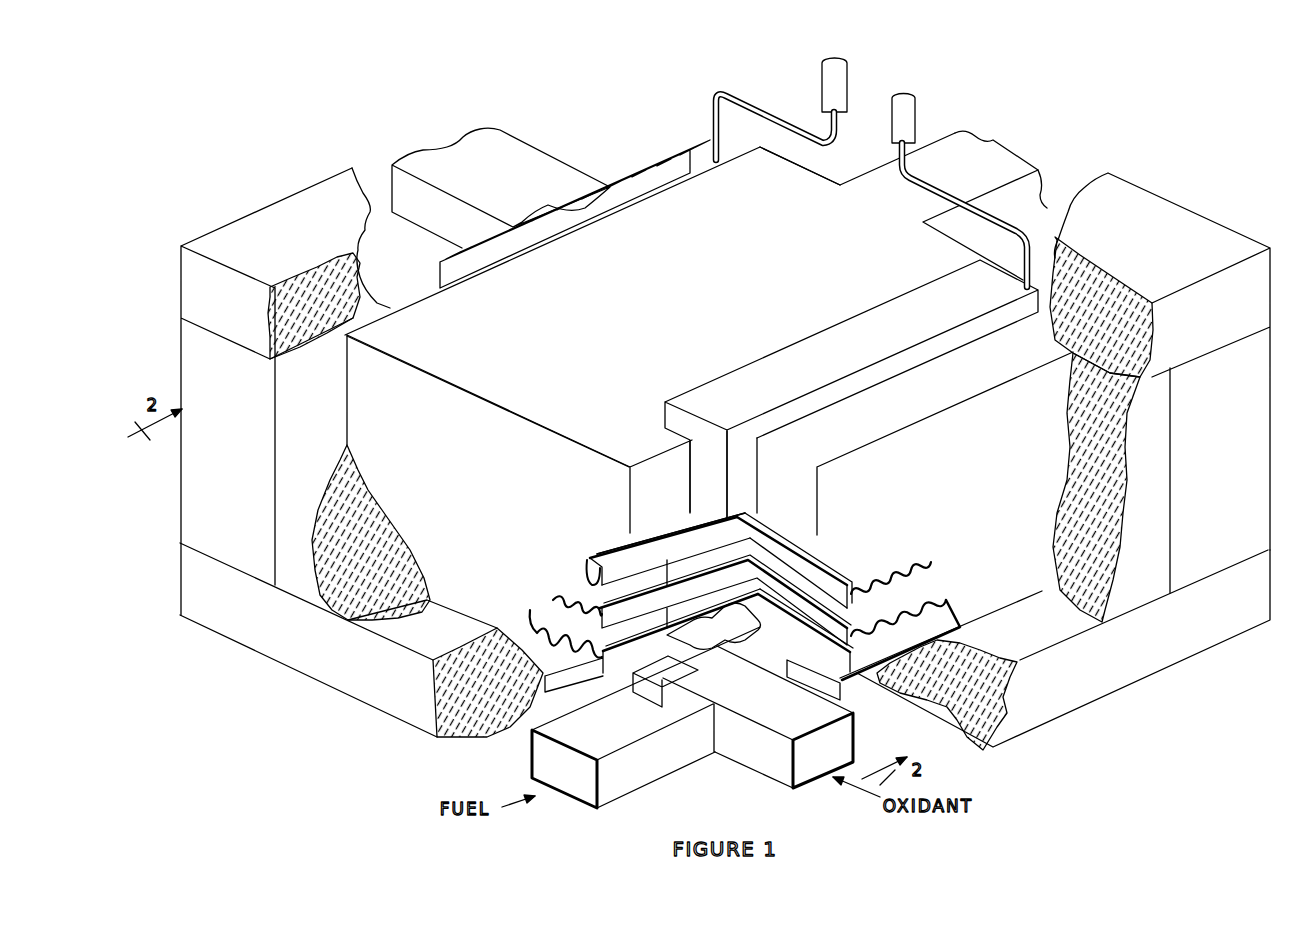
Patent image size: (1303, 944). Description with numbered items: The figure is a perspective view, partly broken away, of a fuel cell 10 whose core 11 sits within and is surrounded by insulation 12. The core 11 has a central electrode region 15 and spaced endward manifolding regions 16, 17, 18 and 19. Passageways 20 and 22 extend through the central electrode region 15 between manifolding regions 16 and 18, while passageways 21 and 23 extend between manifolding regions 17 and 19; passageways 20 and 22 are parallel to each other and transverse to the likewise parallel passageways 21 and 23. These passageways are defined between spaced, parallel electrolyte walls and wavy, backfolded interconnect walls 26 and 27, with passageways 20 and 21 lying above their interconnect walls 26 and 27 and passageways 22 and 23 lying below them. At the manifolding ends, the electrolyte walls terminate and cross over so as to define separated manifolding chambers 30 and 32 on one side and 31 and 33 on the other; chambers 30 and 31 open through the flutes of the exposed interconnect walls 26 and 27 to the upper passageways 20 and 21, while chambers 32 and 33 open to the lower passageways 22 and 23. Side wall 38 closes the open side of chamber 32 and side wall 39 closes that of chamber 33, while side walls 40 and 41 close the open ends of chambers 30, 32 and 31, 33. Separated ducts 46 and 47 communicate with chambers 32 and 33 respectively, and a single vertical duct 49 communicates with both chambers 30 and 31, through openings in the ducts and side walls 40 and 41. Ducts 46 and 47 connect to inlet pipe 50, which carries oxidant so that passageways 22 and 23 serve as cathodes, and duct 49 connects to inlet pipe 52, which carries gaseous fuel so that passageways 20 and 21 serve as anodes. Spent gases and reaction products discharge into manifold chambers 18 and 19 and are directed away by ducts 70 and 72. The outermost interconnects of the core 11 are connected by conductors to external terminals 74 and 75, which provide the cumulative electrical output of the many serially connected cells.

The fuel cell 10 is at (297, 717).
The core 11 is at (1007, 610).
The insulation 12 is at (1000, 740).
The central electrode region 15 is at (688, 311).
The manifolding region 16 is at (500, 411).
The manifolding region 17 is at (948, 411).
The manifolding region 18 is at (832, 178).
The manifolding region 19 is at (628, 176).
The passageway 20 is at (568, 603).
The passageway 21 is at (905, 568).
The passageway 22 is at (550, 613).
The passageway 23 is at (933, 576).
The interconnect wall 26 is at (567, 662).
The interconnect wall 27 is at (947, 695).
The manifolding chamber 30 is at (692, 547).
The manifolding chamber 31 is at (763, 535).
The manifolding chamber 32 is at (622, 582).
The manifolding chamber 33 is at (820, 565).
The side wall 38 is at (590, 547).
The side wall 39 is at (962, 622).
The side wall 40 is at (653, 535).
The side wall 41 is at (788, 527).
The duct 46 is at (620, 675).
The duct 47 is at (840, 662).
The vertical duct 49 is at (737, 627).
The inlet pipe 50 is at (753, 770).
The inlet pipe 52 is at (638, 790).
The duct 70 is at (520, 142).
The duct 72 is at (935, 135).
The external terminal 74 is at (822, 92).
The external terminal 75 is at (907, 93).